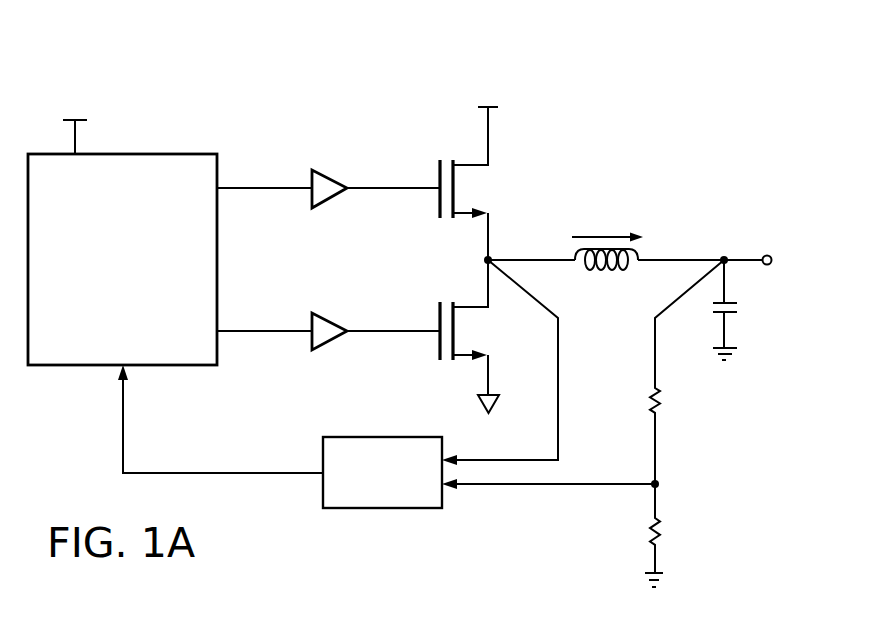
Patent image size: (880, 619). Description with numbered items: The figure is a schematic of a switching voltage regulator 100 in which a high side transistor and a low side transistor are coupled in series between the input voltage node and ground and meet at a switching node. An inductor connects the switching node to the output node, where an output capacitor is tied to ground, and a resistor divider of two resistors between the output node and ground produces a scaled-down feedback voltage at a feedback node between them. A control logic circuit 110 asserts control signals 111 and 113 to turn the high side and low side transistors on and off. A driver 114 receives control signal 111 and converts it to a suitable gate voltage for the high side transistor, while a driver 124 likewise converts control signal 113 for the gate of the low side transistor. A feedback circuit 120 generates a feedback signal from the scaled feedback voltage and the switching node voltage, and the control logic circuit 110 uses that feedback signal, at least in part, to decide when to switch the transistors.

The switching voltage regulator 100 is at (673, 76).
The control logic circuit 110 is at (101, 310).
The control signal 111 is at (262, 188).
The control signal 113 is at (262, 331).
The driver 114 is at (331, 180).
The driver 124 is at (331, 342).
The feedback circuit 120 is at (382, 508).